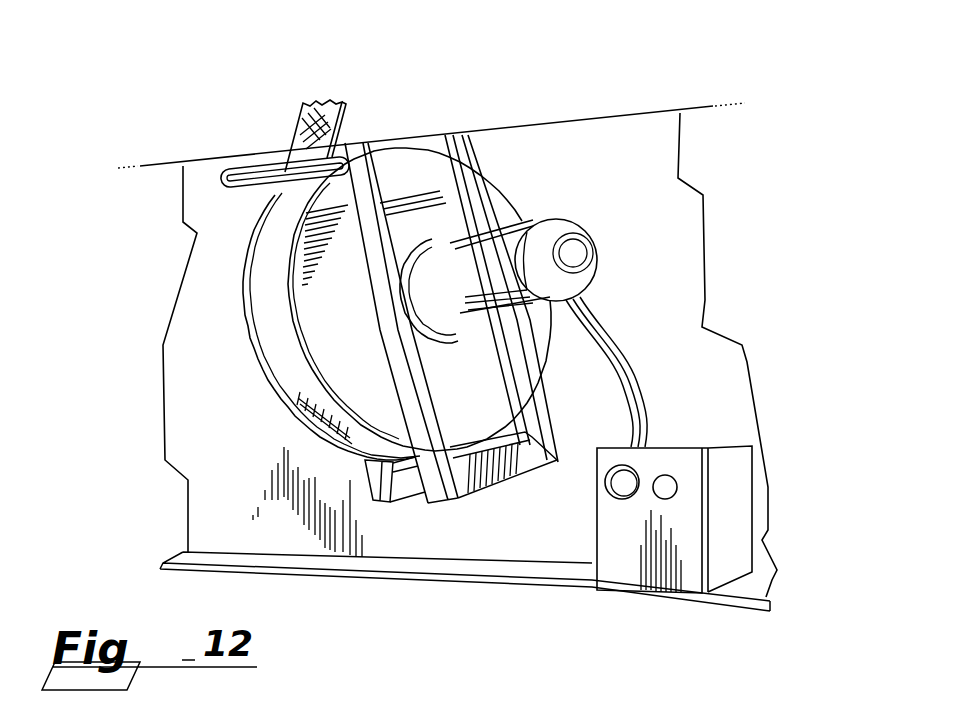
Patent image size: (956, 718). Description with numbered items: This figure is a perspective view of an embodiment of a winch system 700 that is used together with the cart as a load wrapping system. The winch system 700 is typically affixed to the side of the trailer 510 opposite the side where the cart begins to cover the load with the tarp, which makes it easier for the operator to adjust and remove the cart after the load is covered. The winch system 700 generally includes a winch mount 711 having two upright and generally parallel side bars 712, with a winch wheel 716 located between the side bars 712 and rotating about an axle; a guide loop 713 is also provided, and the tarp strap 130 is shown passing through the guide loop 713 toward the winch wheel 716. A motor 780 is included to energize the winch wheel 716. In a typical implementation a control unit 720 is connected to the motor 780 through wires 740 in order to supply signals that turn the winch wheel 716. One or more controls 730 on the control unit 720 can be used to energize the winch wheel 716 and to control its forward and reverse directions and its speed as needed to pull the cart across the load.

The strap / belt 130 is at (300, 110).
The trailer 510 is at (660, 205).
The winch system 700 is at (436, 117).
The winch mount 711 is at (445, 518).
The side bars 712 is at (377, 483).
The guide loop 713 is at (233, 167).
The winch wheel 716 is at (327, 323).
The control unit 720 is at (643, 530).
The controls 730 is at (667, 480).
The wires 740 is at (622, 373).
The motor 780 is at (557, 222).